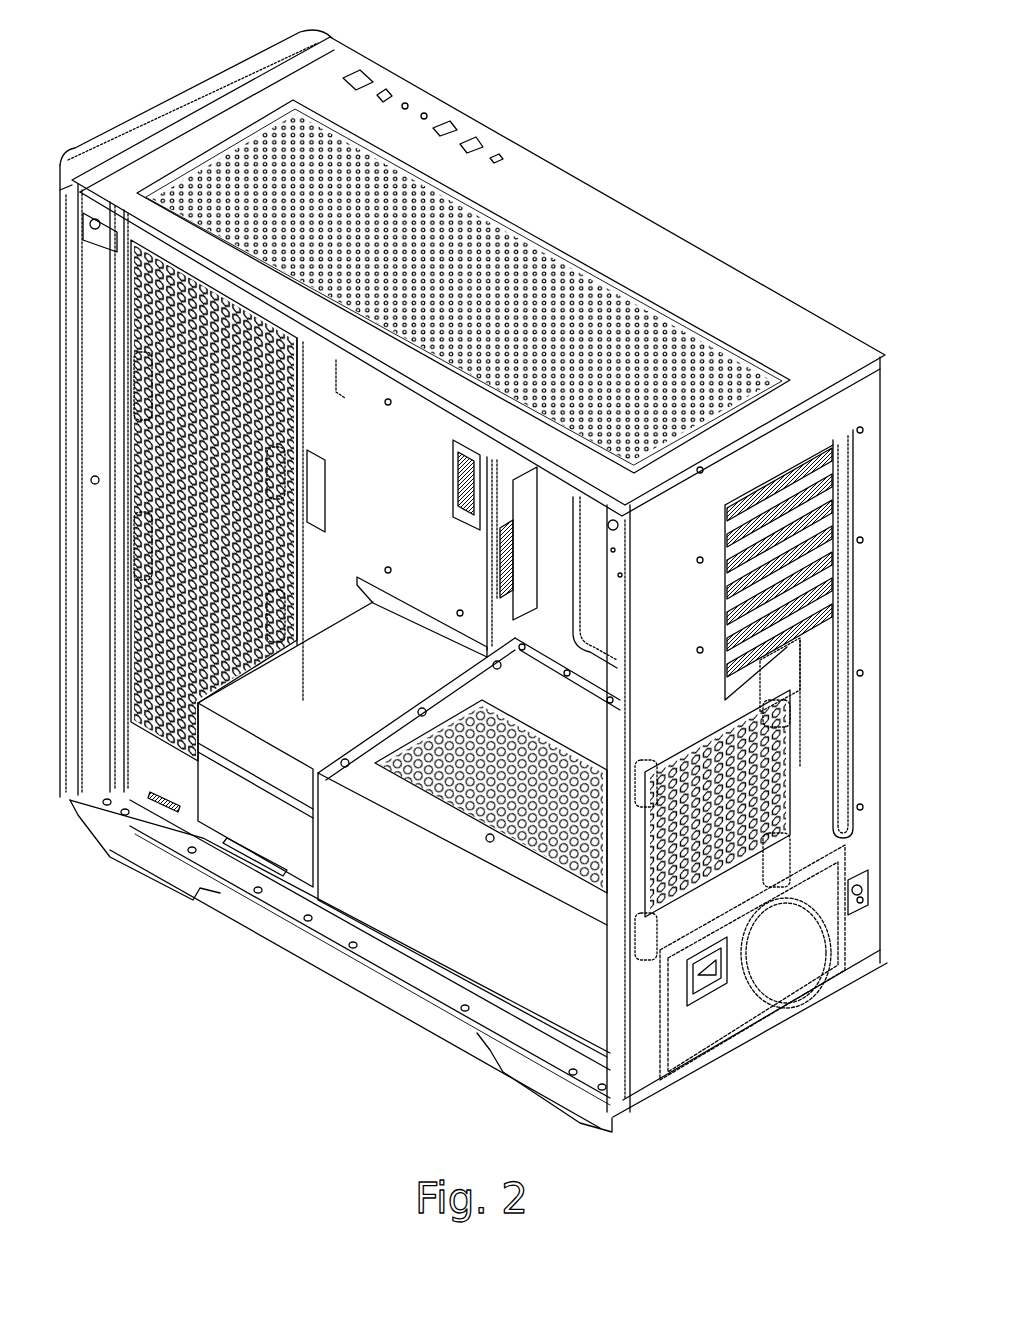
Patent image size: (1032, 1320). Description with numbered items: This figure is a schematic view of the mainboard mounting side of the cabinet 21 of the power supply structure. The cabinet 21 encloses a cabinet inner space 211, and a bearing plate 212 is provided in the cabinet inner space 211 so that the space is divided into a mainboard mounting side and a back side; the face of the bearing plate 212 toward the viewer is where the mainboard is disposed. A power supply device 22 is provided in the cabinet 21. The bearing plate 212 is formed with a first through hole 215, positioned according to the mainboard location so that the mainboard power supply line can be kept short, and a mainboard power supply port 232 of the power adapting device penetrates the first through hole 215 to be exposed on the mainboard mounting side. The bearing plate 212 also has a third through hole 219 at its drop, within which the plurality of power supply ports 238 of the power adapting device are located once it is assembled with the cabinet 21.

The cabinet 21 is at (282, 893).
The cabinet inner space 211 is at (178, 768).
The bearing plate 212 is at (357, 400).
The first through hole 215 is at (483, 463).
The third through hole 219 is at (537, 540).
The power supply device 22 is at (718, 1020).
The mainboard power supply port 232 is at (453, 440).
The power supply ports 238 is at (510, 530).